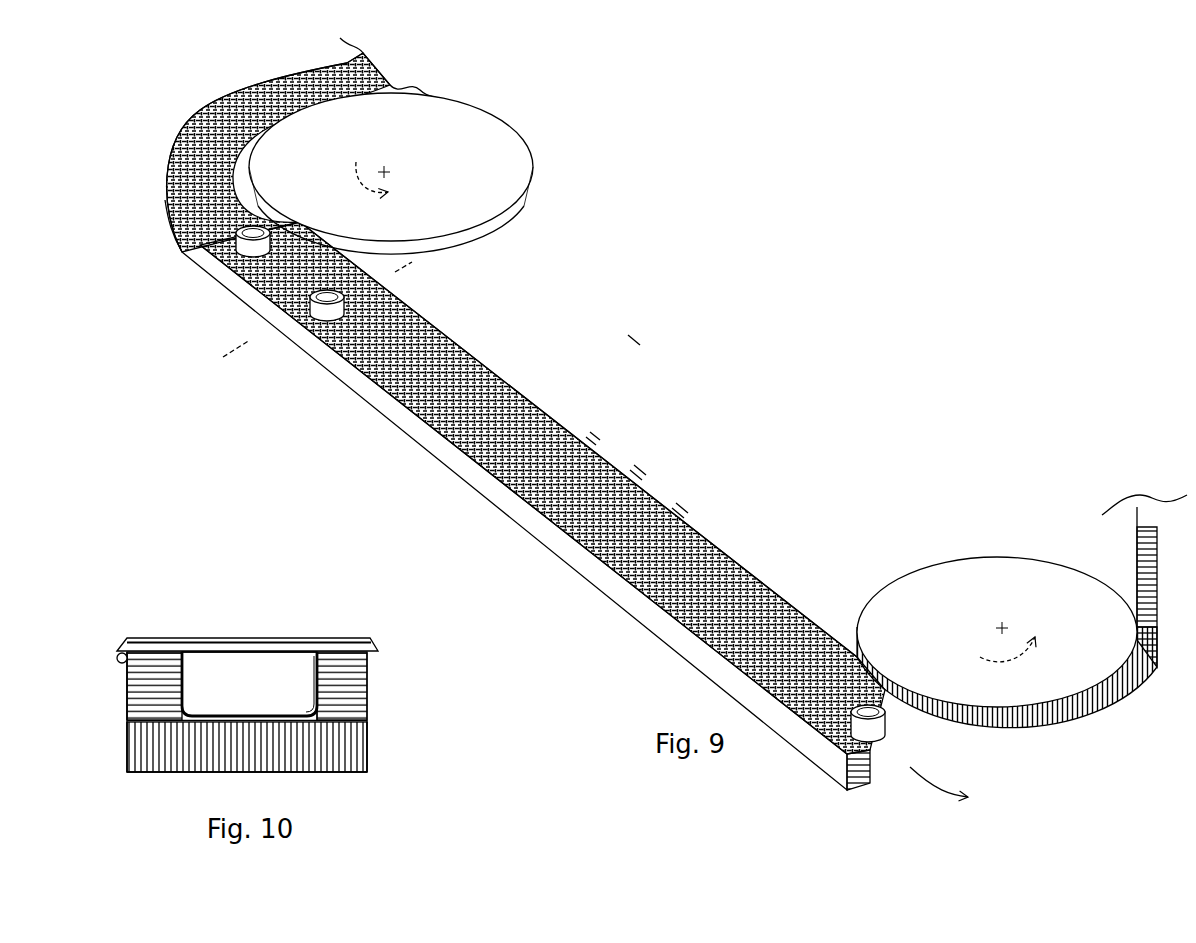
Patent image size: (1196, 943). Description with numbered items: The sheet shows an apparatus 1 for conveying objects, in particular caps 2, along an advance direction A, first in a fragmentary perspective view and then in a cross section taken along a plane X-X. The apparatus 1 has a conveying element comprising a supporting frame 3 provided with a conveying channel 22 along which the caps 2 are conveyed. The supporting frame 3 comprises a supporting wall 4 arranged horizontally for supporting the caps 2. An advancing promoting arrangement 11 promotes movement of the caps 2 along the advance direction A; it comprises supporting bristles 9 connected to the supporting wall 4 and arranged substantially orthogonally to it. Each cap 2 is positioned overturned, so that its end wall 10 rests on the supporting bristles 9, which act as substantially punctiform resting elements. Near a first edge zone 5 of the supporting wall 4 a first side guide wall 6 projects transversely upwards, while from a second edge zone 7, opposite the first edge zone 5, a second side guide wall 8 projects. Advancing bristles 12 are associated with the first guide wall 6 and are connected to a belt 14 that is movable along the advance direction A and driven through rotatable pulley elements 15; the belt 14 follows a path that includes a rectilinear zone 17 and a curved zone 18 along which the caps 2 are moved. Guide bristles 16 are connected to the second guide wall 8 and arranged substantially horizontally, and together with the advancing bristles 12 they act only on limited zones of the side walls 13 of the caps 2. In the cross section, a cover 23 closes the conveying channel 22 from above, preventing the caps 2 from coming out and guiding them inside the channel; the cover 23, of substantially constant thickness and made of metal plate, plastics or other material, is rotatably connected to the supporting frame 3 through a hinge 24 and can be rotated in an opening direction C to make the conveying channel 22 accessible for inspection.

In FIG. 9, the apparatus 1 is at (628, 262).
In FIG. 10, the apparatus 1 is at (78, 568).
In FIG. 9, the caps 2 is at (195, 245).
In FIG. 10, the caps 2 is at (247, 668).
In FIG. 10, the supporting frame 3 is at (370, 767).
In FIG. 10, the supporting wall 4 is at (327, 777).
In FIG. 10, the first edge zone 5 is at (370, 784).
In FIG. 9, the first side guide wall 6 is at (488, 347).
In FIG. 10, the first side guide wall 6 is at (368, 703).
In FIG. 10, the second edge zone 7 is at (128, 783).
In FIG. 9, the second side guide wall 8 is at (375, 400).
In FIG. 10, the second side guide wall 8 is at (127, 708).
In FIG. 9, the supporting bristles 9 is at (872, 740).
In FIG. 10, the supporting bristles 9 is at (353, 740).
In FIG. 10, the end wall 10 is at (220, 713).
In FIG. 9, the advancing promoting arrangement 11 is at (586, 437).
In FIG. 10, the advancing promoting arrangement 11 is at (283, 590).
In FIG. 9, the advancing bristles 12 is at (630, 470).
In FIG. 10, the advancing bristles 12 is at (352, 677).
In FIG. 10, the side walls 13 is at (310, 684).
In FIG. 9, the belt 14 is at (672, 508).
In FIG. 9, the rotatable pulley elements 15 is at (478, 138).
In FIG. 10, the guide bristles 16 is at (157, 700).
In FIG. 9, the rectilinear zone 17 is at (628, 333).
In FIG. 9, the curved zone 18 is at (1067, 787).
In FIG. 10, the conveying channel 22 is at (350, 620).
In FIG. 10, the cover 23 is at (200, 637).
In FIG. 10, the hinge 24 is at (117, 658).
In FIG. 9, the advance direction A is at (562, 403).
In FIG. 10, the opening direction C is at (165, 650).
In FIG. 9, the plane X- X is at (403, 278).